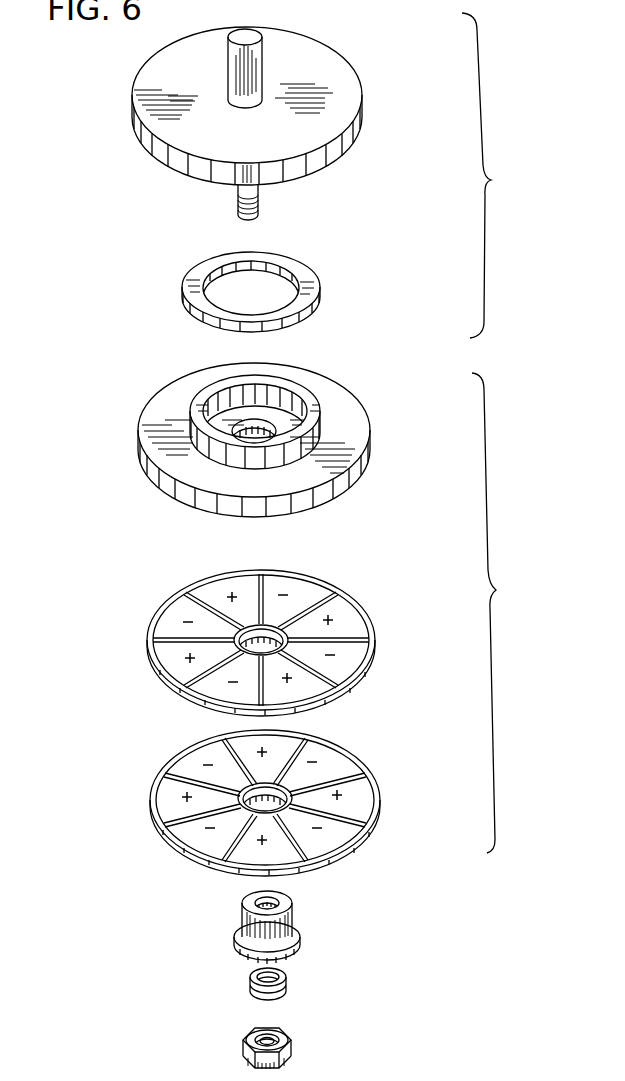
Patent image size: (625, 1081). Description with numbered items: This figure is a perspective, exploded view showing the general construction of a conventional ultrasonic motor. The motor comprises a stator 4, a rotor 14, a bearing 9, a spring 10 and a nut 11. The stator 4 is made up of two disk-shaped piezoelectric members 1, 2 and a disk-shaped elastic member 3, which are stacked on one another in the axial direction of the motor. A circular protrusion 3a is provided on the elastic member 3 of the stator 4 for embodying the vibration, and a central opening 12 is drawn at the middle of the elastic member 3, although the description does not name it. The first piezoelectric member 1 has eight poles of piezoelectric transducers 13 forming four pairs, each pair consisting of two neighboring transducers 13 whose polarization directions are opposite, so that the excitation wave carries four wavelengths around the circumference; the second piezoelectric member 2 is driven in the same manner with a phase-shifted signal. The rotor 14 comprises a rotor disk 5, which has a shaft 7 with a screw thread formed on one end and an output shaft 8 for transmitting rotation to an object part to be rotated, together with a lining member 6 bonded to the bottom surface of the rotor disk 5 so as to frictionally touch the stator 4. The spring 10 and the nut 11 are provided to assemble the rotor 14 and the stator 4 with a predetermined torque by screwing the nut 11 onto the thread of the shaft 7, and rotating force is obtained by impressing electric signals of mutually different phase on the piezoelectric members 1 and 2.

The piezoelectric member 1 is at (153, 672).
The piezoelectric member 2 is at (150, 805).
The elastic member 3 is at (208, 478).
The circular protrusion 3a is at (318, 417).
The stator 4 is at (495, 613).
The rotor disk 5 is at (346, 90).
The lining member 6 is at (321, 292).
The shaft 7 is at (238, 208).
The output shaft 8 is at (228, 84).
The bearing 9 is at (290, 922).
The spring 10 is at (288, 990).
The nut 11 is at (292, 1042).
The center hole 12 is at (232, 418).
The piezoelectric transducers 13 is at (348, 612).
The rotor 14 is at (495, 175).